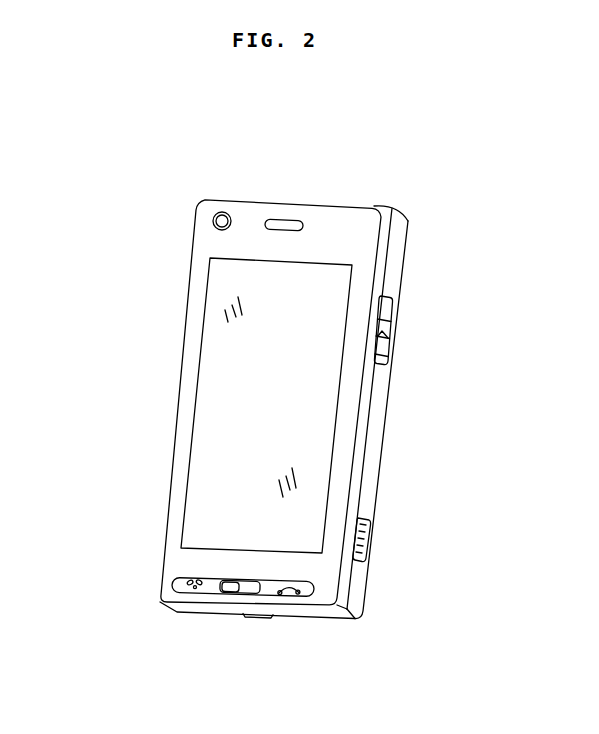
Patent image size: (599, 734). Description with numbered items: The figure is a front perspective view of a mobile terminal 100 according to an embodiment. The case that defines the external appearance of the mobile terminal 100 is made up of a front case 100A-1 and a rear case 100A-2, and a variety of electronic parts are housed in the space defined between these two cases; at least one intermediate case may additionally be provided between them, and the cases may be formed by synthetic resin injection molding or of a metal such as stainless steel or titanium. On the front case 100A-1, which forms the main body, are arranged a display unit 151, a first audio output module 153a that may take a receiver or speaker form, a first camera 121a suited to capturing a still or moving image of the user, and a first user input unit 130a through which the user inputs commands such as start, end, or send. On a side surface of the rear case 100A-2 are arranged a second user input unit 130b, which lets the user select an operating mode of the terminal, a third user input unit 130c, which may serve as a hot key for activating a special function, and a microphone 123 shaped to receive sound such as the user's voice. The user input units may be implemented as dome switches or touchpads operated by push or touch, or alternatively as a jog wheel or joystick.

The mobile terminal 100 is at (140, 208).
The front case 100A-1 is at (383, 206).
The rear case 100A-2 is at (397, 242).
The display unit 151 is at (213, 393).
The first camera 121a is at (221, 212).
The first audio output module 153a is at (285, 219).
The first user input unit 130a is at (192, 577).
The second user input unit 130b is at (394, 332).
The third user input unit 130c is at (371, 533).
The microphone 123 is at (260, 616).